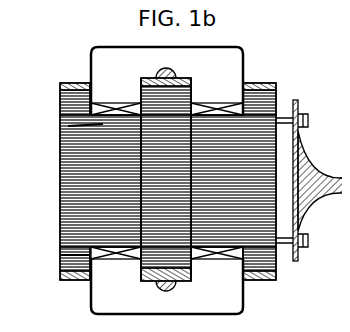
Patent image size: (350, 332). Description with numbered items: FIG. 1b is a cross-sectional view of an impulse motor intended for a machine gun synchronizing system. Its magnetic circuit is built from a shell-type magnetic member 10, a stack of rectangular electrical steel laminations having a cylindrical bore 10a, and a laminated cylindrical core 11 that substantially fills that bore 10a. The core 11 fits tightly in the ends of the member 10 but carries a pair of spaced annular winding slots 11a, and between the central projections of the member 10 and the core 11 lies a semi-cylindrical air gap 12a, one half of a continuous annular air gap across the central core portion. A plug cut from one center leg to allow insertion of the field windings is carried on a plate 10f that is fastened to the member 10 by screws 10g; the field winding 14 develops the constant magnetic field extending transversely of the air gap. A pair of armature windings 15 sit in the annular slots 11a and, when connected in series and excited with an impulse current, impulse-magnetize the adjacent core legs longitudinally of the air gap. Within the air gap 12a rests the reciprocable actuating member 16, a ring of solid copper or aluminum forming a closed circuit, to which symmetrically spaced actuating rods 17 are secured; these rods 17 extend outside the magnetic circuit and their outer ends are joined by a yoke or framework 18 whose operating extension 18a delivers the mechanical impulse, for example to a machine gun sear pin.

The shell-type magnetic member 10 is at (53, 264).
The cylindrical bore 10a is at (60, 247).
The plate 10f is at (183, 76).
The screws 10g is at (158, 63).
The cylindrical core 11 is at (60, 157).
The annular winding slots 11a is at (88, 114).
The semi-cylindrical air gap 12a is at (183, 92).
The winding 14 is at (213, 42).
The armature windings 15 is at (93, 250).
The actuating member 16 is at (130, 76).
The actuating rods 17 is at (300, 117).
The yoke or framework 18 is at (307, 156).
The operating extension or rod 18a is at (336, 186).